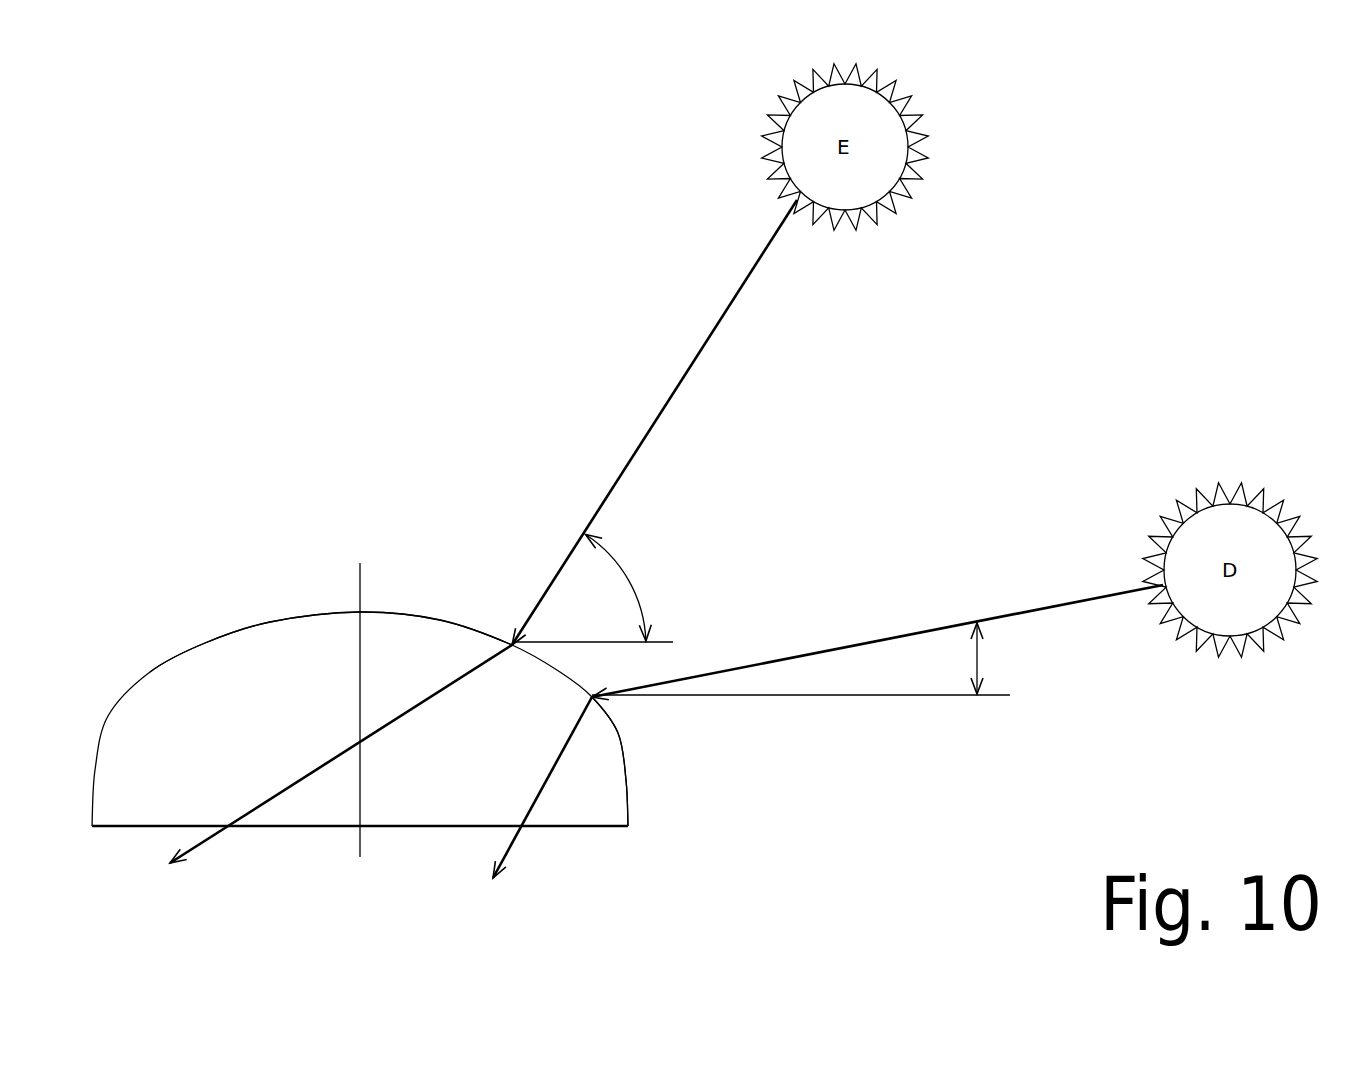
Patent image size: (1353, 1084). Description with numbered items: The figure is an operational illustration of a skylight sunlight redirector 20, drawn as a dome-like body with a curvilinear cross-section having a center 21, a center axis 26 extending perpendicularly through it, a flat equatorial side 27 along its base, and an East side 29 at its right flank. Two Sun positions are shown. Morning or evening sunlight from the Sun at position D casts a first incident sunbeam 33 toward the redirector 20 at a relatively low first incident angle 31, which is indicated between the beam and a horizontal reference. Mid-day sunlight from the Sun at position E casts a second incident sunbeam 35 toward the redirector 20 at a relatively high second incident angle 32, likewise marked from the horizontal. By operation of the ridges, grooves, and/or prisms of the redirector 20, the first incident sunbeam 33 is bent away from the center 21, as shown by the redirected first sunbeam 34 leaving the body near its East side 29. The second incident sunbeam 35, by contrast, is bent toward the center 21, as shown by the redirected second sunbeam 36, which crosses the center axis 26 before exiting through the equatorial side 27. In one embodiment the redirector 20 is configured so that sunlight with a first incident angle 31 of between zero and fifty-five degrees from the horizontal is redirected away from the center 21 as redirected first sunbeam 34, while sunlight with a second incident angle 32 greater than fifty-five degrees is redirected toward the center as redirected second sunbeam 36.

The redirector 20 is at (193, 527).
The center 21 is at (360, 612).
The center axis 26 is at (360, 568).
The equatorial side 27 is at (335, 810).
The East side 29 is at (618, 733).
The first incident angle 31 is at (983, 662).
The second incident angle 32 is at (633, 585).
The first incident sunbeam 33 is at (908, 633).
The redirected first sunbeam 34 is at (548, 787).
The second incident sunbeam 35 is at (696, 354).
The redirected second sunbeam 36 is at (325, 760).